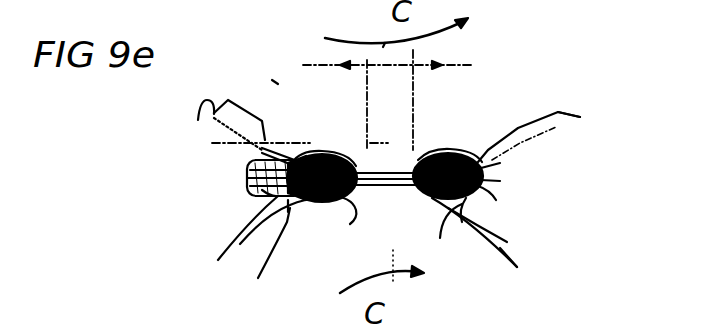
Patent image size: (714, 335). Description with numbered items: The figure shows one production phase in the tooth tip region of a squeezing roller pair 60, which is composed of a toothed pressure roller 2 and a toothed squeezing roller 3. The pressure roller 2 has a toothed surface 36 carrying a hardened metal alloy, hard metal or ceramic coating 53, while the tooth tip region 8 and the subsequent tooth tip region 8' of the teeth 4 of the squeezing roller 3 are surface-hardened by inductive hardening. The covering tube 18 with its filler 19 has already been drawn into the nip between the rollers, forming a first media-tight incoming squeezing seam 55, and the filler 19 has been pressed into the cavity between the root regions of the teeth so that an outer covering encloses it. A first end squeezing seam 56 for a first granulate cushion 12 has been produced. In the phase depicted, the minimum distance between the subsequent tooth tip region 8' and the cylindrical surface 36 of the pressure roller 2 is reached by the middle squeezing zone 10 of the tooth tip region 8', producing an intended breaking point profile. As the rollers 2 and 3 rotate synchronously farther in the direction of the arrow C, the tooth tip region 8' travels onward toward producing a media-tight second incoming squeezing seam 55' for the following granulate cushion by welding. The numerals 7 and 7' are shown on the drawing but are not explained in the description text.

The toothed pressure roller 2 is at (514, 234).
The toothed squeezing roller 3 is at (525, 139).
The teeth 4 is at (236, 134).
The roller 7 is at (448, 138).
The second roller 7' is at (322, 139).
The tooth tip region 8 is at (529, 134).
The subsequent tooth tip region 8' is at (391, 69).
The middle squeezing zone 10 is at (392, 160).
The first granulate cushion 12 is at (493, 275).
The covering tube 18 is at (272, 200).
The filler 19 is at (247, 178).
The toothed surface 36 is at (264, 246).
The ceramic coating 53 is at (291, 249).
The first incoming squeezing seam 55 is at (509, 201).
The second incoming squeezing seam 55' is at (350, 233).
The first end squeezing seam 56 is at (400, 205).
The squeezing roller pair 60 is at (275, 82).